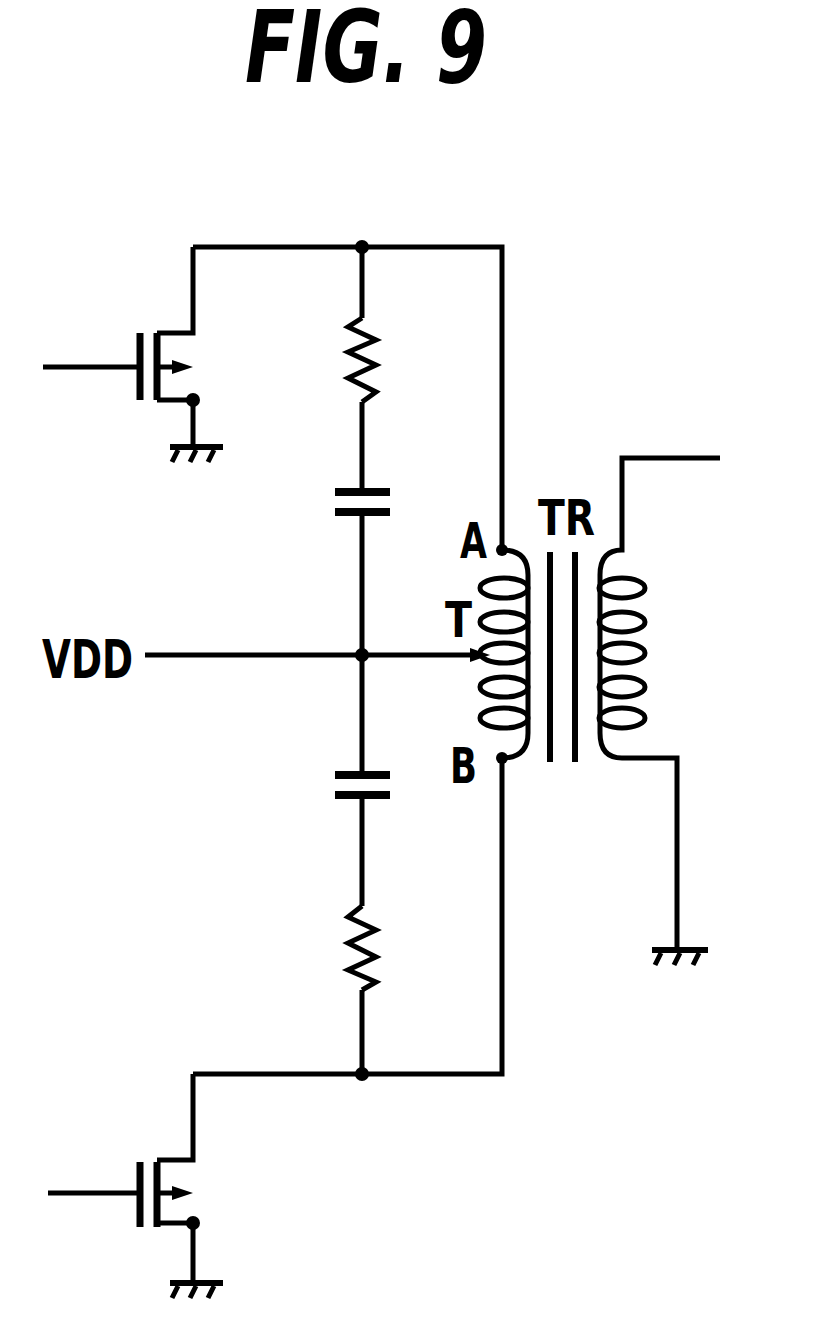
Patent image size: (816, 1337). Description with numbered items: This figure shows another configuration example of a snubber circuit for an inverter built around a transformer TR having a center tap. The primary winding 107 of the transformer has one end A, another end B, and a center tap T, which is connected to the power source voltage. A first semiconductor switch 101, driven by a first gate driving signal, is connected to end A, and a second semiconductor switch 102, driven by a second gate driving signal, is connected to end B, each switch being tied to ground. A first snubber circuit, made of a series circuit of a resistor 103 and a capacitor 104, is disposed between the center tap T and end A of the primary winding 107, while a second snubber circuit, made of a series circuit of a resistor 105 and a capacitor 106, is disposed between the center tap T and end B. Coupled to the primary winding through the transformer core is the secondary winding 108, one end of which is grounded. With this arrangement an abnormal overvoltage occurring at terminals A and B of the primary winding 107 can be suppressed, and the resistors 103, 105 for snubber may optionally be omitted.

The first semiconductor switch 101 is at (133, 354).
The second semiconductor switch 102 is at (135, 1186).
The resistor for snubber 103 is at (324, 360).
The capacitor for snubber 104 is at (321, 512).
The resistor for snubber 105 is at (323, 948).
The capacitor for snubber 106 is at (323, 789).
The primary winding 107 is at (487, 656).
The secondary winding of transformer TR 108 is at (659, 711).